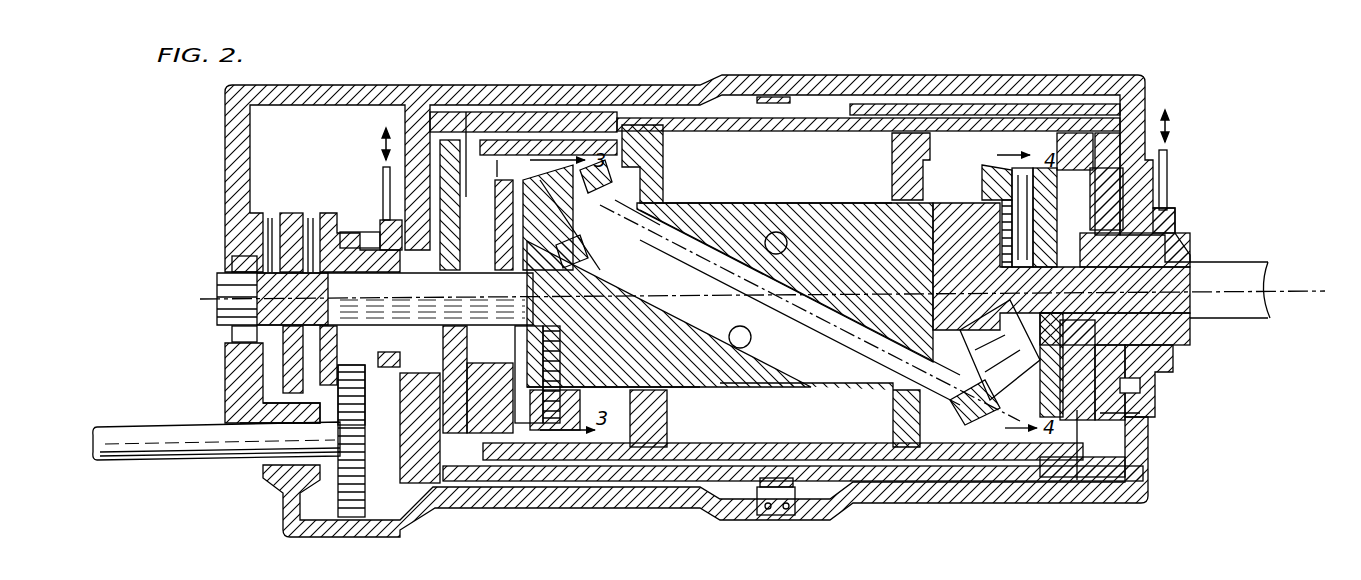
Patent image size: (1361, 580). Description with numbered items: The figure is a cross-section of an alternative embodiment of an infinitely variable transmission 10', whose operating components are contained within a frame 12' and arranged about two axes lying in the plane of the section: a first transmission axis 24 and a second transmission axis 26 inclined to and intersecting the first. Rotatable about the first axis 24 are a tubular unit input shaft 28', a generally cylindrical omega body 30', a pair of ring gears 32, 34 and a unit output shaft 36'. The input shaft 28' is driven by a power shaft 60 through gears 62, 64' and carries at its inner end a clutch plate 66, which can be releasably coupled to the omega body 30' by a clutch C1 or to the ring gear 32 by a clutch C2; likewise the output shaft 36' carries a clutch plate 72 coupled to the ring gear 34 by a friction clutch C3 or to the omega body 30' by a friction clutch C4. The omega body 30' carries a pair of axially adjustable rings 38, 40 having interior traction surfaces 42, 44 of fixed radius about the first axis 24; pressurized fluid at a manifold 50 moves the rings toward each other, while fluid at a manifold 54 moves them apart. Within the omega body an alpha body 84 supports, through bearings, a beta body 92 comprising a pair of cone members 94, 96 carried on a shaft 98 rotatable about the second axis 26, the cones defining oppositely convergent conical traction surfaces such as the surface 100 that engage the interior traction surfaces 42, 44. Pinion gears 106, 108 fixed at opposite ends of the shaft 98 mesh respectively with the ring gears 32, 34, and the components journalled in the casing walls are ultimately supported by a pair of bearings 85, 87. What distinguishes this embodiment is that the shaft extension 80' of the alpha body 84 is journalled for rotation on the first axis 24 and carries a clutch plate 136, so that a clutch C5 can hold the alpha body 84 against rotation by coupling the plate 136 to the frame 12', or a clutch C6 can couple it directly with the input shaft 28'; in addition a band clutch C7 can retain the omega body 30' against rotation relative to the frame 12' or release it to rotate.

The transmission 10' is at (707, 282).
The frame 12' is at (1064, 222).
The first transmission axis 24 is at (1298, 288).
The second transmission axis 26 is at (842, 322).
The unit input shaft 28' is at (353, 217).
The omega body 30' is at (776, 239).
The ring gear 32 is at (583, 402).
The ring gear 34 is at (983, 185).
The unit output shaft 36' is at (1108, 266).
The axially adjustable ring 38 is at (656, 167).
The axially adjustable ring 40 is at (898, 155).
The traction surface 42 is at (660, 388).
The traction surface 44 is at (893, 198).
The manifold 50 is at (377, 220).
The manifold 54 is at (1176, 210).
The power shaft 60 is at (218, 457).
The gear 62 is at (353, 492).
The gear 64' is at (368, 402).
The clutch plate 66 is at (482, 372).
The clutch plate 72 is at (1092, 150).
The shaft extension 80' is at (375, 299).
The alpha body 84 is at (617, 362).
The bearing 85 is at (357, 355).
The bearing 87 is at (1140, 390).
The beta body 92 is at (778, 392).
The cone member 94 is at (737, 233).
The cone member 96 is at (858, 270).
The shaft 98 is at (710, 203).
The traction surface 100 is at (840, 388).
The pinion gear 106 is at (558, 190).
The pinion gear 108 is at (995, 362).
The clutch plate 136 is at (232, 407).
The clutch C1 is at (466, 197).
The clutch C2 is at (497, 177).
The friction clutch C3 is at (1077, 420).
The friction clutch C4 is at (1140, 413).
The clutch C5 is at (268, 217).
The clutch C6 is at (308, 217).
The band clutch C7 is at (773, 97).